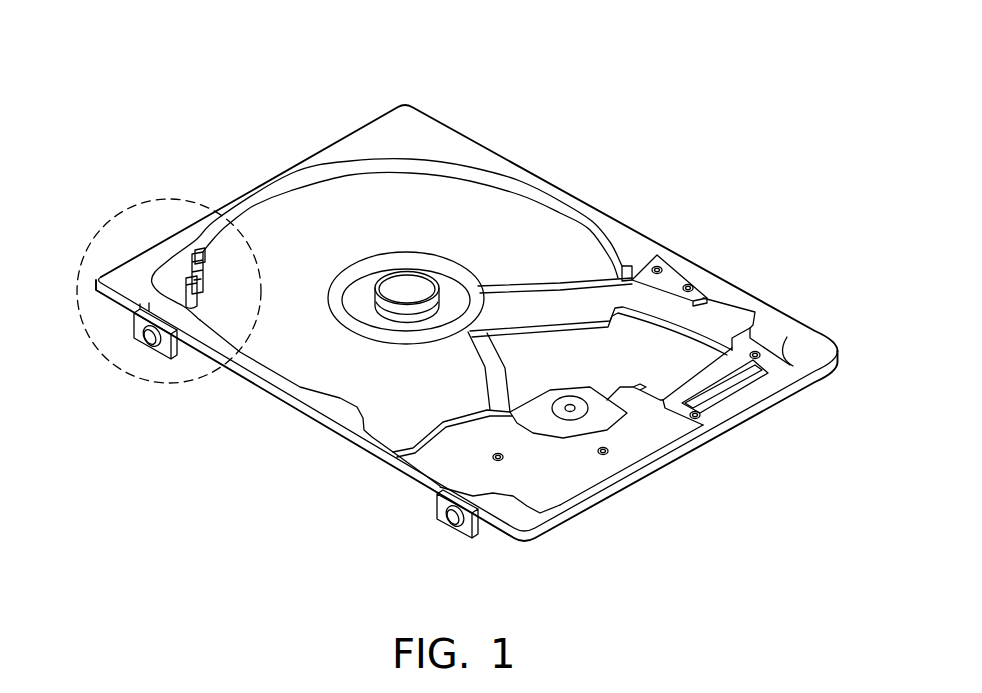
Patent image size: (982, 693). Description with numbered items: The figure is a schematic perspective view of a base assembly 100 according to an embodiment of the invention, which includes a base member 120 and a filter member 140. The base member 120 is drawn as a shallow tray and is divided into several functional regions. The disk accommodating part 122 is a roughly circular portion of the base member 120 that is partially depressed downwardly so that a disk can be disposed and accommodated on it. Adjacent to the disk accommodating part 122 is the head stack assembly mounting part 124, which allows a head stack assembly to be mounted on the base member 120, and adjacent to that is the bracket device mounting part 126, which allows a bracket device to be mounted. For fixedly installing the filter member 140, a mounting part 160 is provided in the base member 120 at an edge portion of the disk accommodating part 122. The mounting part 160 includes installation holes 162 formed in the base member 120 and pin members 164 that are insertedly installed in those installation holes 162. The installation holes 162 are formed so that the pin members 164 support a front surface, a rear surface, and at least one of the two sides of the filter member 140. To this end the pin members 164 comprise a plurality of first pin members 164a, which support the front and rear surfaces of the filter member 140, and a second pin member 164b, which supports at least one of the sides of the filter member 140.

The base assembly 100 is at (677, 40).
The base member 120 is at (427, 121).
The disk accommodating part 122 is at (363, 200).
The head stack assembly mounting part 124 is at (557, 478).
The bracket device mounting part 126 is at (787, 371).
The filter member 140 is at (137, 253).
The mounting part 160 is at (273, 75).
The installation holes 162 is at (208, 264).
The pin members 164 is at (222, 130).
The first pin members 164a is at (190, 252).
The second pin member 164b is at (199, 253).